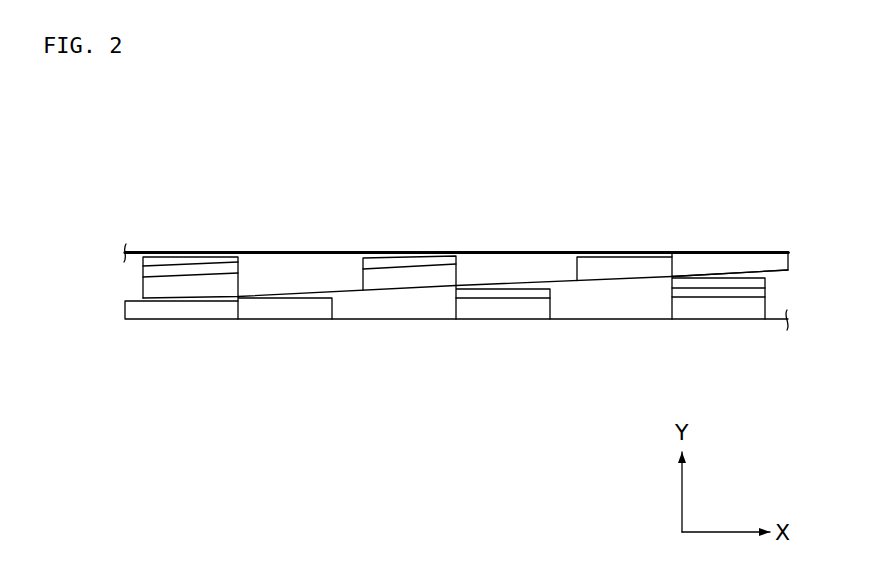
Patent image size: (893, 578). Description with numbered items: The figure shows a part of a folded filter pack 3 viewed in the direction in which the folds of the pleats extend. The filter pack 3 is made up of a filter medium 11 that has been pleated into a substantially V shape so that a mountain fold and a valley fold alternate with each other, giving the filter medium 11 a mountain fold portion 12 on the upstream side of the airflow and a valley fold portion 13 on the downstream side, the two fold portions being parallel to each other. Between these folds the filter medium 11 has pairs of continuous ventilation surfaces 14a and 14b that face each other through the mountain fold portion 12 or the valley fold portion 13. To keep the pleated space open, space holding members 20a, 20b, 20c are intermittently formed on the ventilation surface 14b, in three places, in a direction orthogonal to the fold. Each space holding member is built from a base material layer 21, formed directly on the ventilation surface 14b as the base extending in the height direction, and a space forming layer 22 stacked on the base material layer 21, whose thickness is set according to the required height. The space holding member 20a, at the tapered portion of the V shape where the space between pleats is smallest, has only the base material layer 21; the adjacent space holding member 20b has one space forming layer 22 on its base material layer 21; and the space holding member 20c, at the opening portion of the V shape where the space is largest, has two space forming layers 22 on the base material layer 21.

The filter pack 3 is at (490, 251).
The filter medium 11 is at (712, 252).
The mountain fold portion 12 is at (125, 312).
The valley fold portion 13 is at (789, 258).
The ventilation surface 14a is at (338, 255).
The ventilation surface 14b is at (306, 290).
The space holding member 20a is at (235, 308).
The space holding member 20b is at (450, 308).
The space holding member 20c is at (668, 306).
The base material layer 21 is at (278, 310).
The space forming layer 22 is at (544, 290).